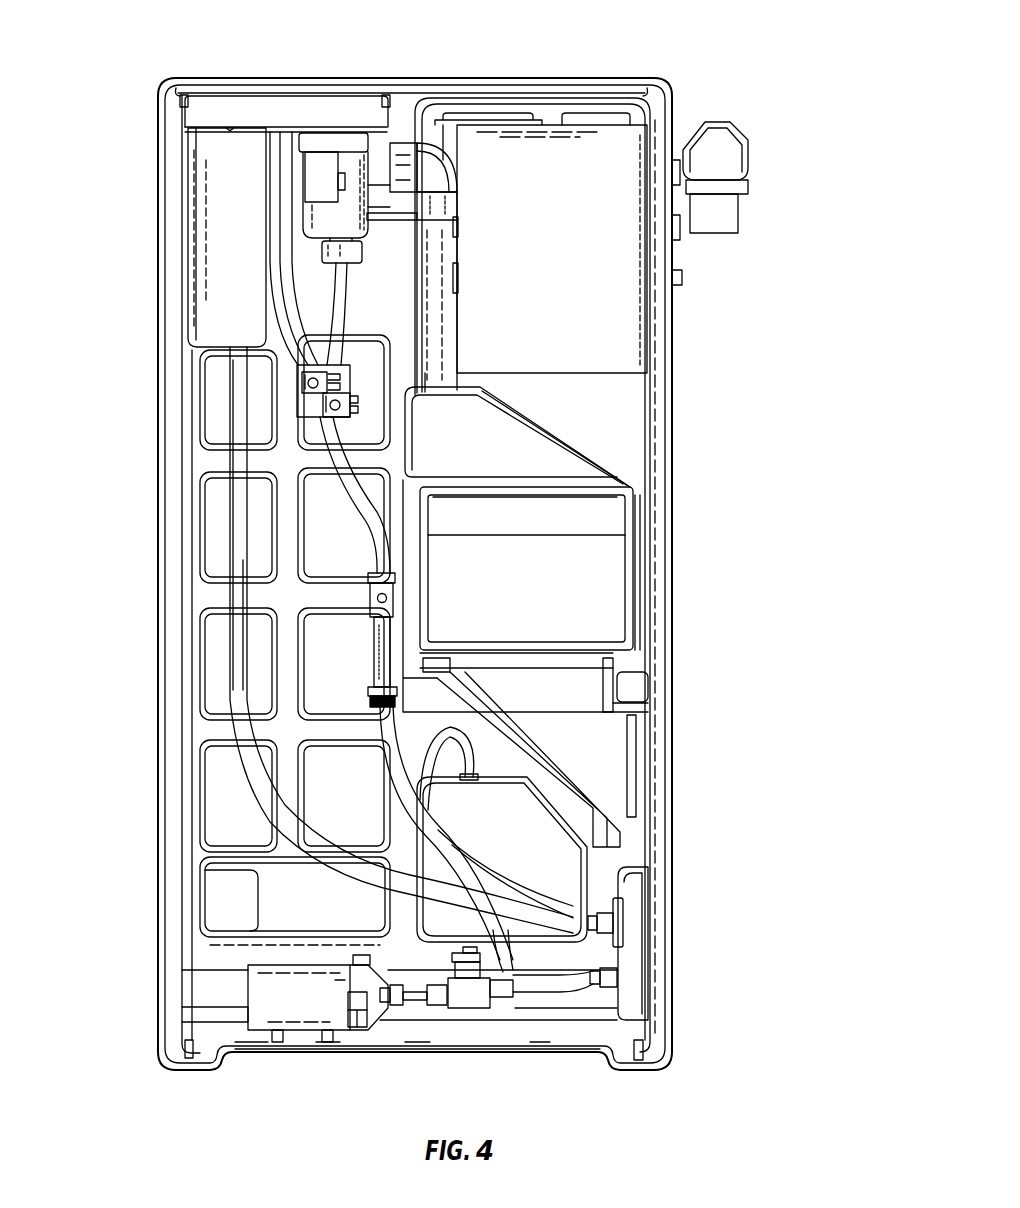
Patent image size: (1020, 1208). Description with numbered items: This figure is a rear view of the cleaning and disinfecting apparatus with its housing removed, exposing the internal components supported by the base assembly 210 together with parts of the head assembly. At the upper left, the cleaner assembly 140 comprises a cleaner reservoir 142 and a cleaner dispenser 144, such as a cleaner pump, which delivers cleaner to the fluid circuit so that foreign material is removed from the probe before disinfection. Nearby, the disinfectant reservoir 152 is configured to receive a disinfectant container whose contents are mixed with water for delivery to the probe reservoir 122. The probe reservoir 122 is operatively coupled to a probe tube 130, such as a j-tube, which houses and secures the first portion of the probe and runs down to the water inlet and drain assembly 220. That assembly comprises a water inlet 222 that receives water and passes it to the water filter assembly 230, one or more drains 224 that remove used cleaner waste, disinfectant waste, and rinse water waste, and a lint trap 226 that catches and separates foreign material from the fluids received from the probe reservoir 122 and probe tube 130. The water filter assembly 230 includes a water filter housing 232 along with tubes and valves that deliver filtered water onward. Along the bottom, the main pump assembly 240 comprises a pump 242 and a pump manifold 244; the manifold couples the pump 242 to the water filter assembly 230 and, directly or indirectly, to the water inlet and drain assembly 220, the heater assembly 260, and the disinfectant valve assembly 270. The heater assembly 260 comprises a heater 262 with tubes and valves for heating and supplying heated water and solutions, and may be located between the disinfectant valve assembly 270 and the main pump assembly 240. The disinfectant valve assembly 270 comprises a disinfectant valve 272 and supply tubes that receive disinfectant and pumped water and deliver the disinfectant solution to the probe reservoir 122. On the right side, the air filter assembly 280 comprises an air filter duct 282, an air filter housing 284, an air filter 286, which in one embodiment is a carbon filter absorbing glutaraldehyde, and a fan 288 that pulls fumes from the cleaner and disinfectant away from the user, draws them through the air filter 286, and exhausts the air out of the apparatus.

The cleaner assembly 140 is at (200, 78).
The probe reservoir 122 is at (267, 127).
The cleaner dispenser 144 is at (332, 127).
The disinfectant reservoir 152 is at (342, 243).
The cleaner reservoir 142 is at (217, 246).
The probe tube 130 is at (232, 554).
The disinfectant valve assembly 270 is at (302, 385).
The disinfectant valve 272 is at (305, 405).
The heater assembly 260 is at (367, 630).
The heater 262 is at (380, 662).
The air filter duct 282 is at (437, 313).
The air filter housing 284 is at (567, 448).
The air filter assembly 280 is at (679, 461).
The air filter 286 is at (610, 542).
The base assembly 210 is at (668, 662).
The fan 288 is at (636, 738).
The water filter housing 232 is at (523, 821).
The water filter assembly 230 is at (587, 848).
The lint trap 226 is at (623, 902).
The water inlet 222 is at (613, 923).
The drains 224 is at (613, 988).
The water inlet and drain assembly 220 is at (627, 1018).
The main pump assembly 240 is at (185, 1002).
The pump 242 is at (280, 1027).
The pump manifold 244 is at (470, 995).